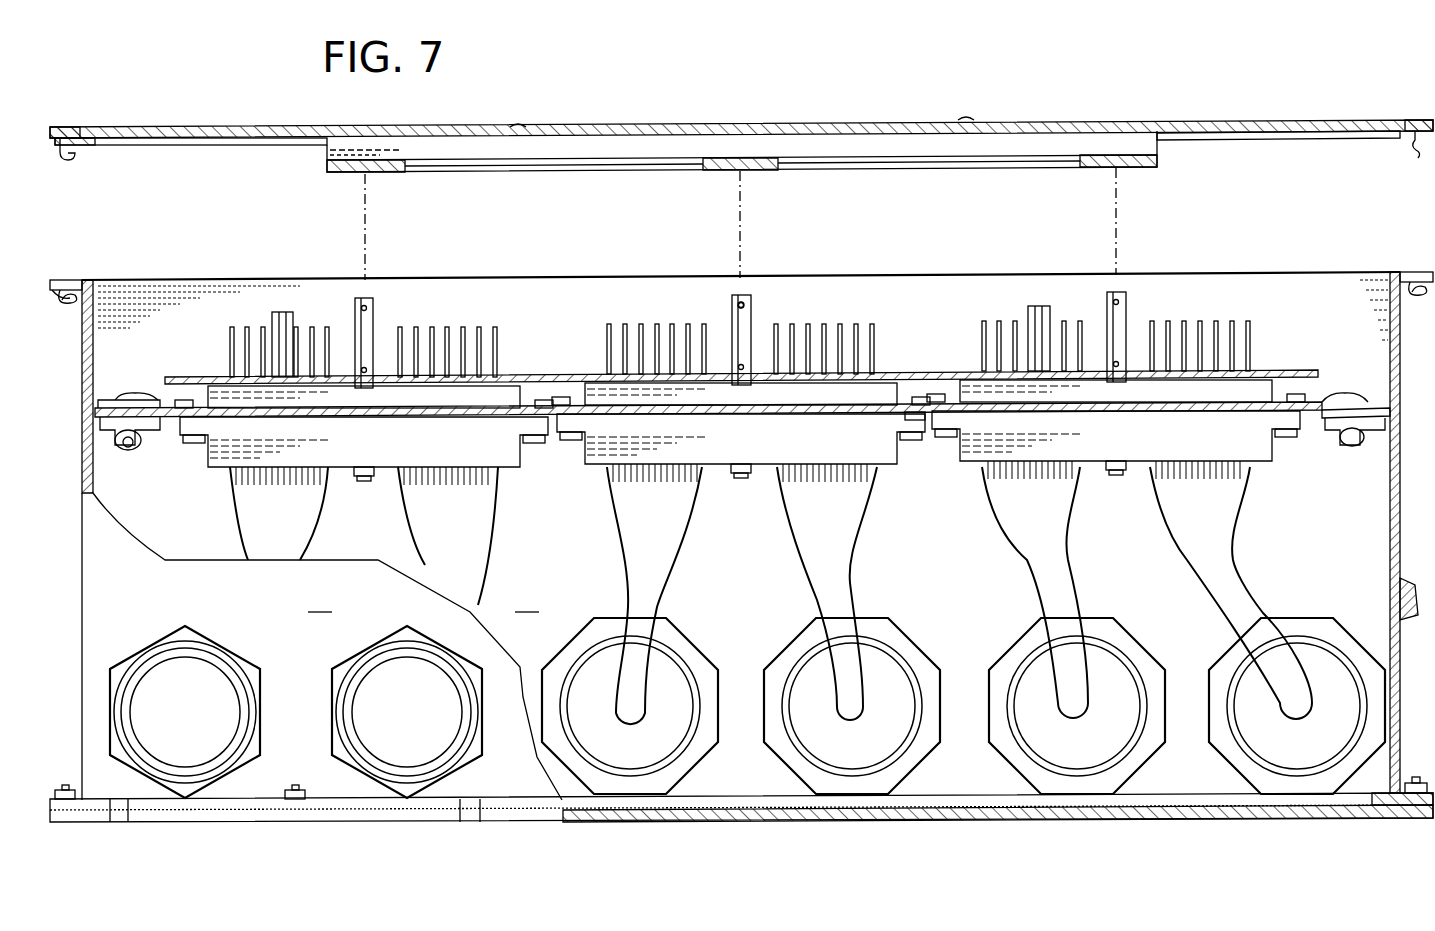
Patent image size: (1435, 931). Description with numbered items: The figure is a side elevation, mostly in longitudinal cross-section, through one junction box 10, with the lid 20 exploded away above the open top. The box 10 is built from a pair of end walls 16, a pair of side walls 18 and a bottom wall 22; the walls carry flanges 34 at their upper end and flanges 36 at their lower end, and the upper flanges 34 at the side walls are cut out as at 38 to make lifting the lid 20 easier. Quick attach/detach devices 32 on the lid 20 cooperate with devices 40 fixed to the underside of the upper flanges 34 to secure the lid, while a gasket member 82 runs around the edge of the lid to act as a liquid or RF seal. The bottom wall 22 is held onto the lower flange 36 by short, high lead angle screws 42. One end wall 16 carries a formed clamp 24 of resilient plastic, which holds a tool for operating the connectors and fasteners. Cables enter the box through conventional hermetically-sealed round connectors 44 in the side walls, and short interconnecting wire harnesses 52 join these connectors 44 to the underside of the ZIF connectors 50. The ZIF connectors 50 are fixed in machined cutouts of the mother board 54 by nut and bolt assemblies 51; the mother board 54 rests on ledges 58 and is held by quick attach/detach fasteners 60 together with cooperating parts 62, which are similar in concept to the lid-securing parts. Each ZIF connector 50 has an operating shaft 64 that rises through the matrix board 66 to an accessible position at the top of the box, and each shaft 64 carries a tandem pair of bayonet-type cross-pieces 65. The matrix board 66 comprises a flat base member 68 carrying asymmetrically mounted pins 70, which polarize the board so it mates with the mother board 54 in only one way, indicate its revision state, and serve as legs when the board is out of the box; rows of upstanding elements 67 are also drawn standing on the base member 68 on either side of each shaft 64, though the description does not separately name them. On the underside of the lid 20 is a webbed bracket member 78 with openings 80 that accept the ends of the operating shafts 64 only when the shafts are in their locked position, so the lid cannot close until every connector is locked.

The junction box 10 is at (797, 850).
The end wall 16 is at (98, 476).
The side wall 18 is at (423, 600).
The lid 20 is at (741, 155).
The bottom wall 22 is at (381, 823).
The formed clamp 24 is at (1408, 577).
The quick attach/detach device 32 is at (68, 126).
The upper end flange 34 is at (1418, 270).
The lower end flange 36 is at (456, 798).
The cutout 38 is at (64, 278).
The lid securing device 40 is at (66, 293).
The screw 42 is at (63, 788).
The connector 44 is at (250, 660).
The ZIF connector 50 is at (513, 470).
The nut and bolt assembly 51 is at (557, 446).
The interconnecting wire harness 52 is at (232, 530).
The mother board 54 is at (918, 447).
The ledge 58 is at (116, 400).
The quick attach/detach fastener 60 is at (146, 395).
The mother board holding part 62 is at (140, 443).
The operating shaft 64 is at (375, 304).
The bayonet type cross-piece 65 is at (735, 372).
The matrix board 66 is at (1297, 362).
The contact pins 67 is at (598, 320).
The flat base member 68 is at (180, 377).
The pin 70 is at (272, 318).
The webbed bracket member 78 is at (455, 170).
The opening 80 is at (362, 173).
The gasket member 82 is at (226, 140).